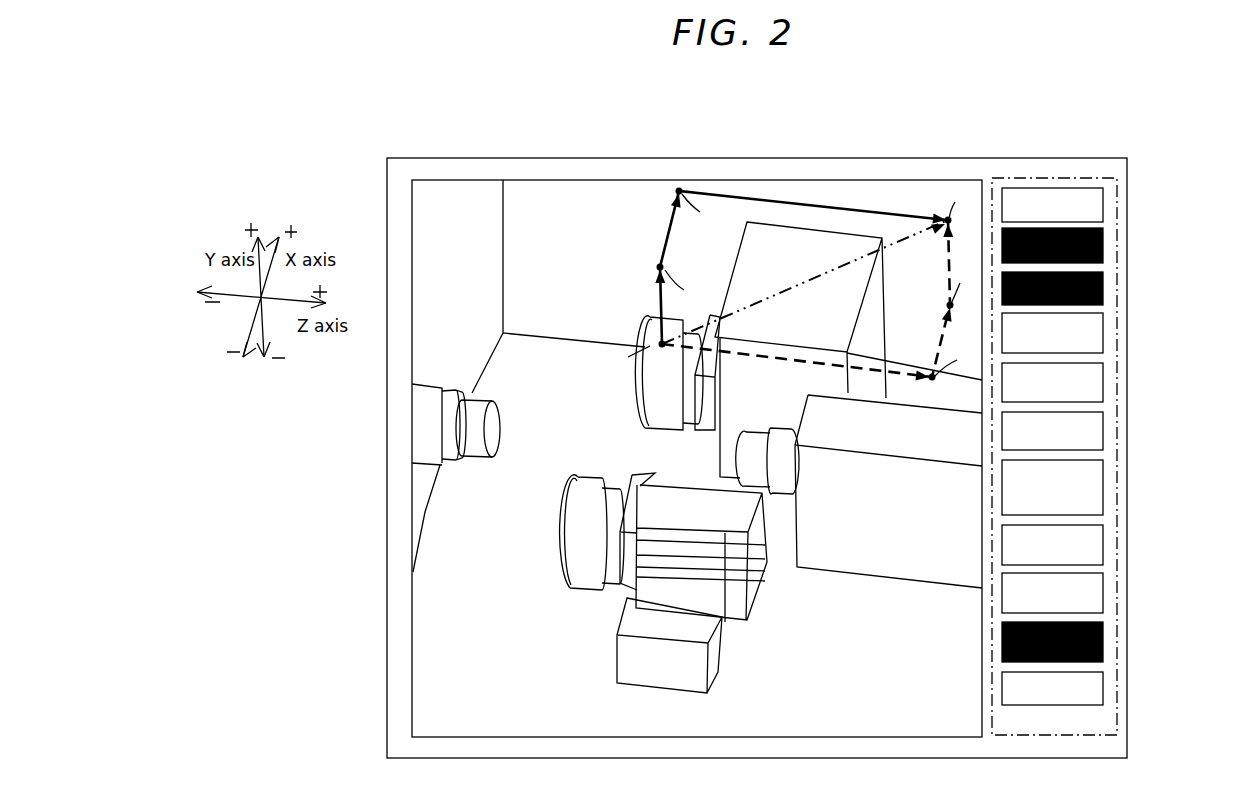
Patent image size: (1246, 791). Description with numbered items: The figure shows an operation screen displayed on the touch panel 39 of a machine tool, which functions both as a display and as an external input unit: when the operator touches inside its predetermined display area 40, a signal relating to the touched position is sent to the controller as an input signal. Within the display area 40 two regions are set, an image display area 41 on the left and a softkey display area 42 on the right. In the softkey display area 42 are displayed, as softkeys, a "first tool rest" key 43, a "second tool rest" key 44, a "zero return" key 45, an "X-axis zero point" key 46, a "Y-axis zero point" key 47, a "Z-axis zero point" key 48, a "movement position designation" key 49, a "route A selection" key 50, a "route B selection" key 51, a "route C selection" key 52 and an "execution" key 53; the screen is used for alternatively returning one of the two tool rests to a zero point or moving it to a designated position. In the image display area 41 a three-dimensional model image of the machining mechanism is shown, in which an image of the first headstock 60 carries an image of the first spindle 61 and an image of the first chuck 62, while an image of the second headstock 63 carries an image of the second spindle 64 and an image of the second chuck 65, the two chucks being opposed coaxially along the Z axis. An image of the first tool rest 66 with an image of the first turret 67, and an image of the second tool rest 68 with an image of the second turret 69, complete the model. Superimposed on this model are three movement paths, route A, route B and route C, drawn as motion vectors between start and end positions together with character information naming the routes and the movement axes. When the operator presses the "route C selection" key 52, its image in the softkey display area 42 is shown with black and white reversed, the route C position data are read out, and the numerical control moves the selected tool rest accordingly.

The touch panel 39 is at (387, 180).
The display area 40 is at (497, 158).
The image display area 41 is at (731, 180).
The softkey display area 42 is at (1117, 725).
The "first tool rest" key 43 is at (1103, 204).
The "second tool rest" key 44 is at (1103, 247).
The "zero return" key 45 is at (1103, 288).
The "X-axis zero point" key 46 is at (1103, 332).
The "Y-axis zero point" key 47 is at (1103, 380).
The "Z-axis zero point" key 48 is at (1103, 427).
The "movement position designation" key 49 is at (1103, 487).
The "route A selection" key 50 is at (1103, 543).
The "route B selection" key 51 is at (1103, 593).
The "route C selection" key 52 is at (1103, 640).
The "execution" key 53 is at (1103, 687).
The image of the first headstock 60 is at (435, 463).
The image of the first spindle 61 is at (452, 457).
The image of the first chuck 62 is at (475, 453).
The image of the second headstock 63 is at (900, 570).
The image of the second spindle 64 is at (780, 480).
The image of the second chuck 65 is at (745, 465).
The image of the first tool rest 66 is at (750, 582).
The image of the first turret 67 is at (567, 582).
The image of the second tool rest 68 is at (773, 230).
The image of the second turret 69 is at (637, 385).